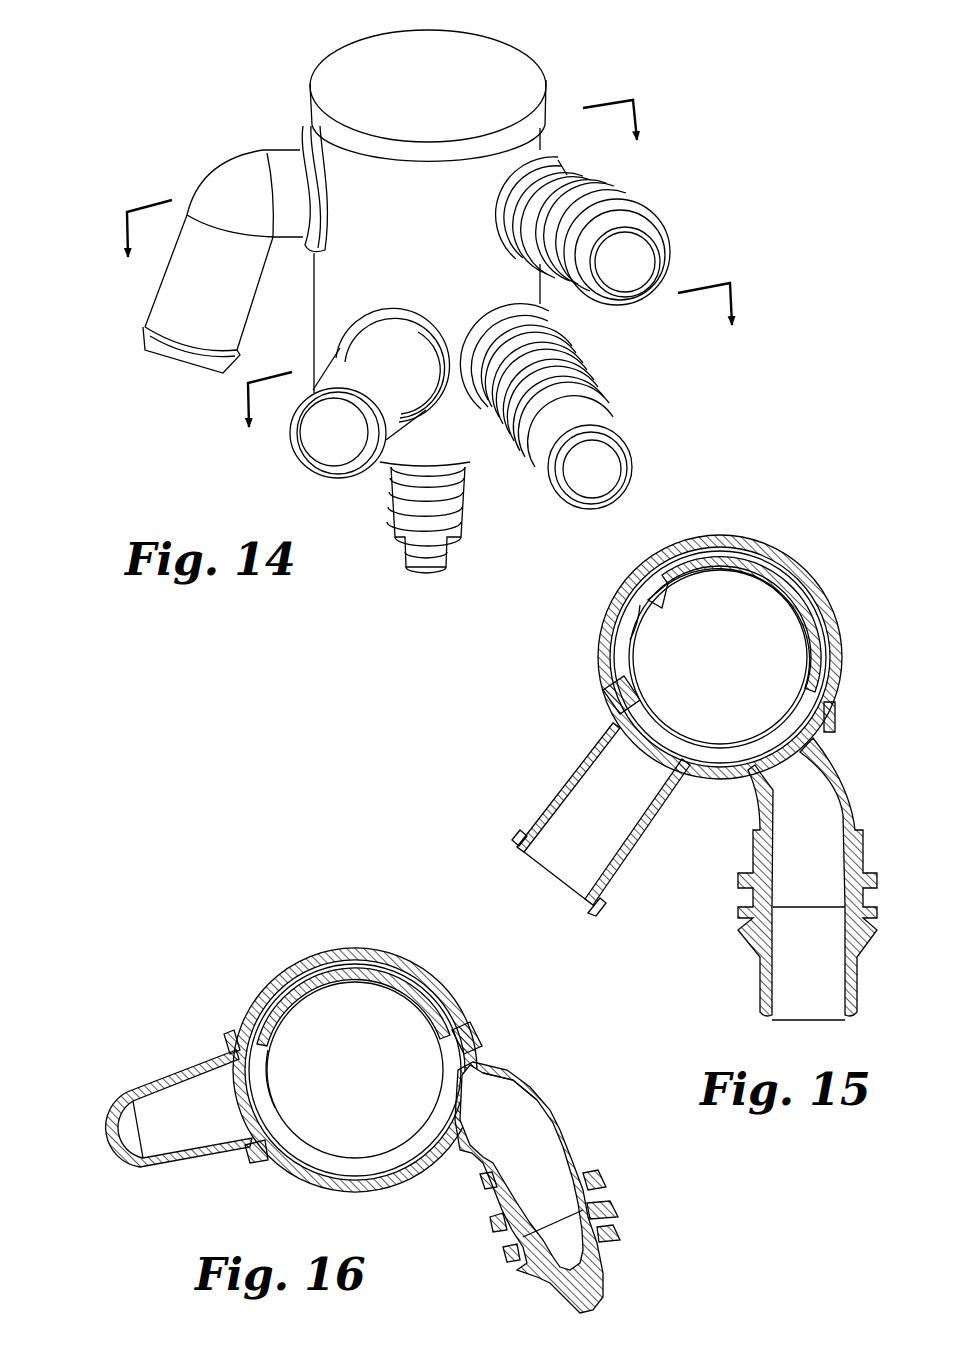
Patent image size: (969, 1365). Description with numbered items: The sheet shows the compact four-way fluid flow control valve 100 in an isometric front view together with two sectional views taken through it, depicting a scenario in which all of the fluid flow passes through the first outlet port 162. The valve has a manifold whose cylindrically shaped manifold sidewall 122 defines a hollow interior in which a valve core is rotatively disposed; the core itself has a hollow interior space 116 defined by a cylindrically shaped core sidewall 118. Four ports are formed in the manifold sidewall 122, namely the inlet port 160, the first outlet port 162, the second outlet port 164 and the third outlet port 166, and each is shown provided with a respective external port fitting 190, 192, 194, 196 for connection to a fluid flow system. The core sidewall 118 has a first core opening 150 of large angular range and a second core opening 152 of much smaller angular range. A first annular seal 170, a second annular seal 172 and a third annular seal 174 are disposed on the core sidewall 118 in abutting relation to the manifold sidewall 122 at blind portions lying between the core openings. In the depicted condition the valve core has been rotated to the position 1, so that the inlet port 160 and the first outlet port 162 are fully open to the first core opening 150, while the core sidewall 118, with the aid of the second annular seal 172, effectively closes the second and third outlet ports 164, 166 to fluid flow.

In FIG. 14, the compact four-way fluid flow control valve 100 is at (600, 85).
In FIG. 15, the hollow interior space 116 is at (732, 713).
In FIG. 16, the hollow interior space 116 is at (381, 1046).
In FIG. 15, the core sidewall 118 is at (773, 547).
In FIG. 16, the core sidewall 118 is at (297, 966).
In FIG. 14, the manifold sidewall 122 is at (432, 240).
In FIG. 15, the manifold sidewall 122 is at (613, 602).
In FIG. 16, the manifold sidewall 122 is at (362, 947).
In FIG. 15, the position 1 is at (665, 583).
In FIG. 16, the first core opening 150 is at (262, 1092).
In FIG. 15, the second core opening 152 is at (637, 612).
In FIG. 16, the inlet port 160 is at (460, 1108).
In FIG. 16, the first outlet port 162 is at (240, 1082).
In FIG. 15, the second outlet port 164 is at (657, 752).
In FIG. 15, the third outlet port 166 is at (790, 747).
In FIG. 16, the first annular seal 170 is at (470, 1033).
In FIG. 15, the second annular seal 172 is at (618, 690).
In FIG. 15, the third annular seal 174 is at (693, 538).
In FIG. 14, the external port fitting 190 is at (653, 200).
In FIG. 16, the external port fitting 190 is at (567, 1122).
In FIG. 14, the external port fitting 192 is at (160, 285).
In FIG. 16, the external port fitting 192 is at (177, 1060).
In FIG. 14, the external port fitting 194 is at (340, 478).
In FIG. 15, the external port fitting 194 is at (564, 790).
In FIG. 14, the external port fitting 196 is at (637, 418).
In FIG. 15, the external port fitting 196 is at (753, 863).